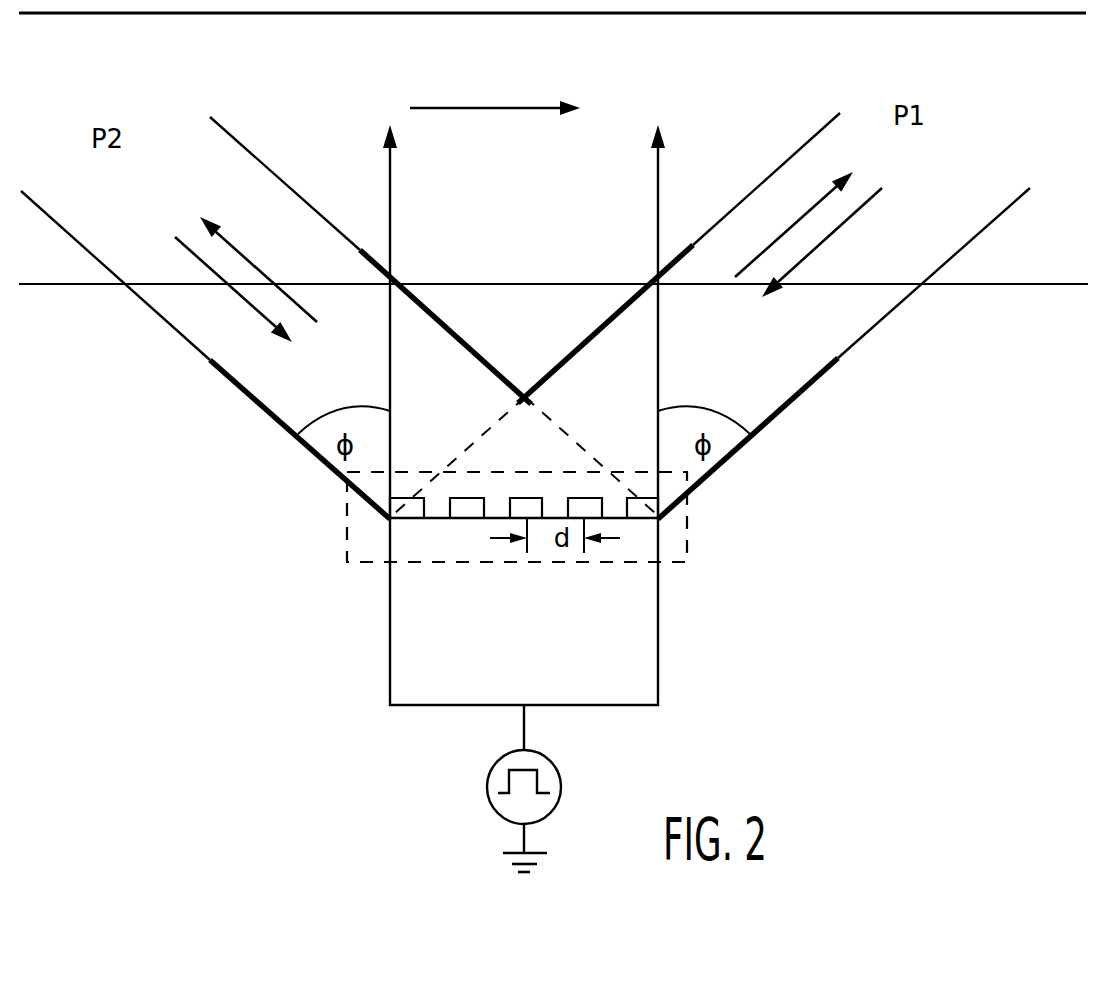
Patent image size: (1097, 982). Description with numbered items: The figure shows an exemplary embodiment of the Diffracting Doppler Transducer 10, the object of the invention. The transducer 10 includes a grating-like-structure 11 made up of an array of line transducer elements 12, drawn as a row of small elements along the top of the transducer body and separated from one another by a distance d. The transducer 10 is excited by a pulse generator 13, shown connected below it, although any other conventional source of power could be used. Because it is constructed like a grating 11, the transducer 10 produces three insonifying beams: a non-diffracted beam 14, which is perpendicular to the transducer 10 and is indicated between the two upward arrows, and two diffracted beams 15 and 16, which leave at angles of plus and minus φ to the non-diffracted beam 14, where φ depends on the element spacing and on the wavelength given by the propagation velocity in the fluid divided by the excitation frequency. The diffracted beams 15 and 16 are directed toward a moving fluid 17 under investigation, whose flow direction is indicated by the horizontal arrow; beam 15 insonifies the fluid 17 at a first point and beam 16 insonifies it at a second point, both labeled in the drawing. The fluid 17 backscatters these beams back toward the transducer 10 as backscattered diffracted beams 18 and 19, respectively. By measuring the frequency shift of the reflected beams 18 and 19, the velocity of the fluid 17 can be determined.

The Diffracting Doppler Transducer 10 is at (403, 631).
The grating-like-structure 11 is at (690, 562).
The line transducer elements 12 is at (467, 512).
The pulse generator 13 is at (562, 784).
The non-diffracted beam 14 is at (658, 230).
The diffracted beam 15 is at (806, 213).
The diffracted beam 16 is at (268, 277).
The moving fluid 17 is at (525, 106).
The backscattered diffracted beam 18 is at (855, 213).
The backscattered diffracted beam 19 is at (209, 277).